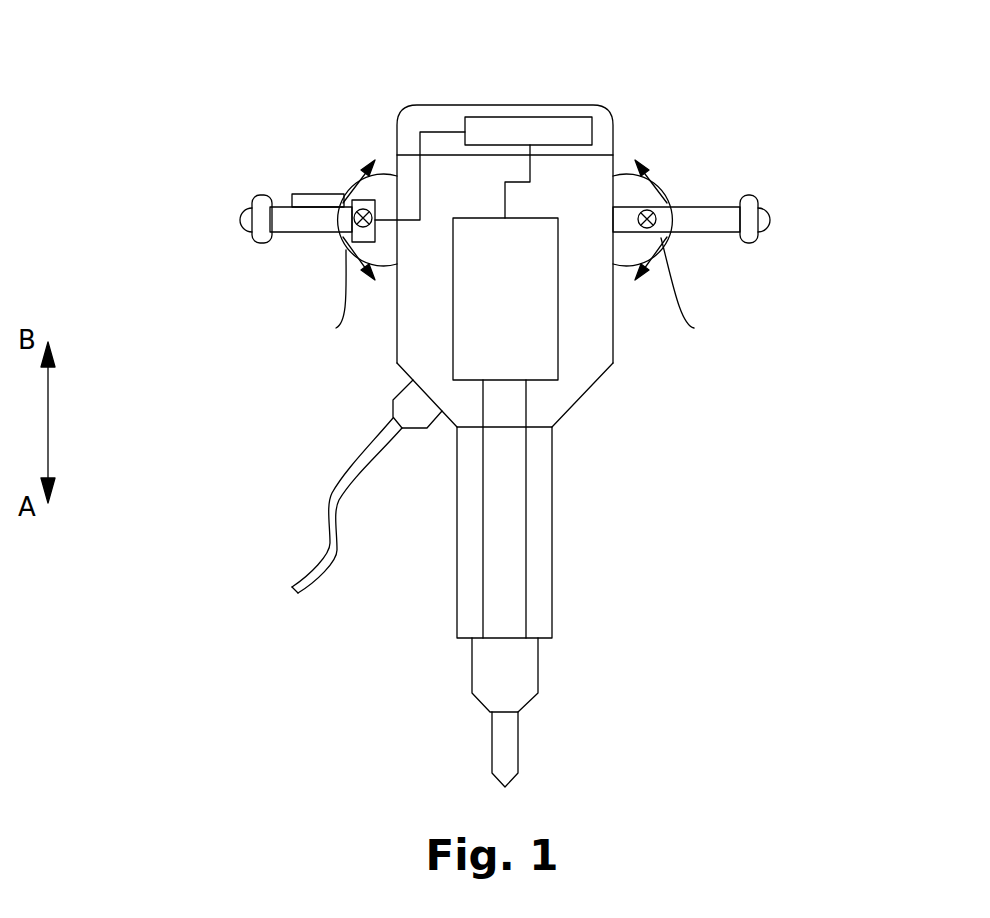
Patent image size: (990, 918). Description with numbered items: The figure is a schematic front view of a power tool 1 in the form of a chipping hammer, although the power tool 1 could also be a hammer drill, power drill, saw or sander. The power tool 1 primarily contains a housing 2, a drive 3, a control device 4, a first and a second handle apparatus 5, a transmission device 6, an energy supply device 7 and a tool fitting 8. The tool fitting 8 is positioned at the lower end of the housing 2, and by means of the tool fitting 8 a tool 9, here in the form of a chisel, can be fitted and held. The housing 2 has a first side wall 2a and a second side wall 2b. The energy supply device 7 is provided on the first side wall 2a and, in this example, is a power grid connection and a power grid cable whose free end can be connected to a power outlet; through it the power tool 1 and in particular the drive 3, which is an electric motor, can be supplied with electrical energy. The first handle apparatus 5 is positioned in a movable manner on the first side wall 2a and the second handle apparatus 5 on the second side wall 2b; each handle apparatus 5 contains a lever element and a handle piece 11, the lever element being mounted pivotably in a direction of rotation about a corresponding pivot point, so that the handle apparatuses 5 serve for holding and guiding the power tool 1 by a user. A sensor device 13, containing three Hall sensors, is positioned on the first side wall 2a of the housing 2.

The power tool 1 is at (873, 157).
The housing 2 is at (550, 412).
The first side wall 2a is at (408, 342).
The second side wall 2b is at (593, 342).
The drive 3 is at (533, 340).
The control device 4 is at (568, 135).
The handle apparatus 5 is at (275, 156).
The transmission device 6 is at (520, 530).
The energy supply device 7 is at (315, 460).
The tool fitting 8 is at (520, 657).
The tool 9 is at (503, 735).
The handle piece 11 is at (295, 225).
The sensor device 13 is at (347, 197).